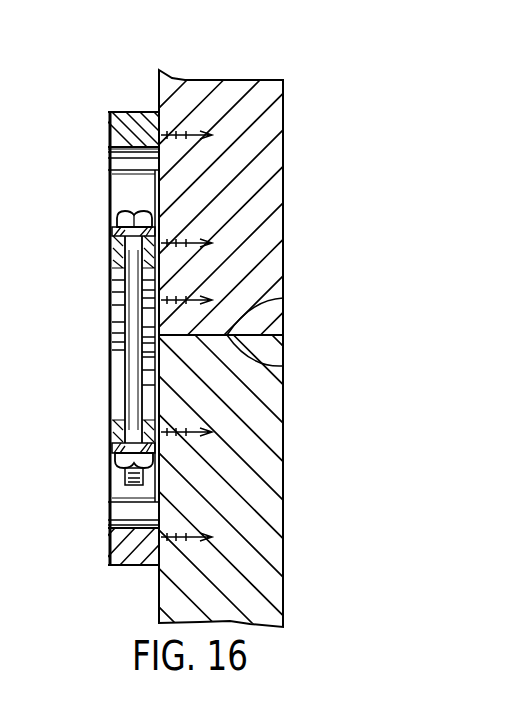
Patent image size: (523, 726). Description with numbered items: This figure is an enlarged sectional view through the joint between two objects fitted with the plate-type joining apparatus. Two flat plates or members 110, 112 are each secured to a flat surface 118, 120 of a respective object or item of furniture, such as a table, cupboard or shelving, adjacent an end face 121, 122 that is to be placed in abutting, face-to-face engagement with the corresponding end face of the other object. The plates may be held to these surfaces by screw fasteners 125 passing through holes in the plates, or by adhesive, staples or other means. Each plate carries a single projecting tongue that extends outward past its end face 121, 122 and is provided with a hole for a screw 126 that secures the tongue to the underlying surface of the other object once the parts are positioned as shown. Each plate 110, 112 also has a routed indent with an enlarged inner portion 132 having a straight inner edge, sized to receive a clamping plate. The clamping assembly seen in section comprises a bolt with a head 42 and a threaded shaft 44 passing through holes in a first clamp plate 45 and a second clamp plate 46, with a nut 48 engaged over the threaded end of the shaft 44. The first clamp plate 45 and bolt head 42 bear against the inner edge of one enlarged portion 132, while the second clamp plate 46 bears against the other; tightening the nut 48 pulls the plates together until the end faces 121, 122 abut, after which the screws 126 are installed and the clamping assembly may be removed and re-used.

The flat plate 110 is at (158, 128).
The flat plate 112 is at (120, 565).
The flat surface 118 is at (284, 122).
The flat surface 120 is at (280, 540).
The end face 121 is at (284, 304).
The end face 122 is at (284, 369).
The screw fastener 125 is at (108, 143).
The screw 126 is at (108, 308).
The enlarged inner portion 132 is at (118, 178).
The bolt head 42 is at (107, 221).
The threaded shaft 44 is at (127, 392).
The first clamp plate 45 is at (112, 236).
The second clamp plate 46 is at (117, 446).
The nut 48 is at (118, 462).